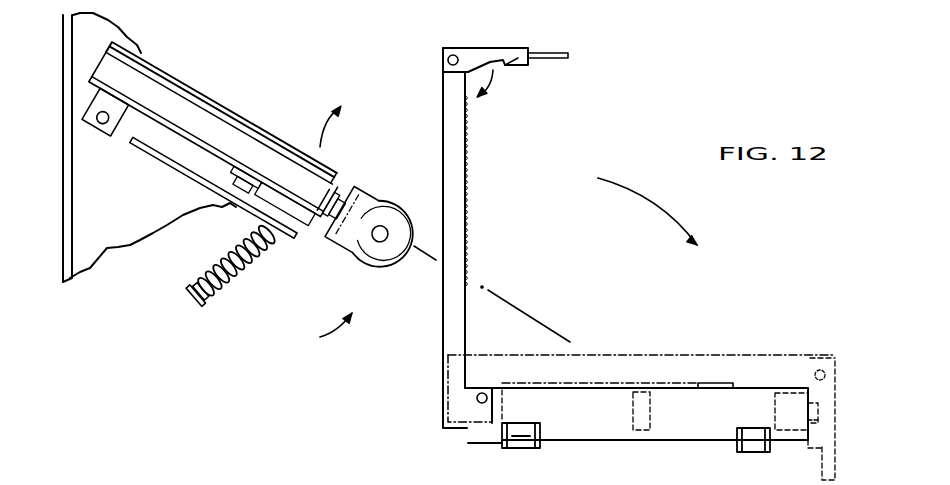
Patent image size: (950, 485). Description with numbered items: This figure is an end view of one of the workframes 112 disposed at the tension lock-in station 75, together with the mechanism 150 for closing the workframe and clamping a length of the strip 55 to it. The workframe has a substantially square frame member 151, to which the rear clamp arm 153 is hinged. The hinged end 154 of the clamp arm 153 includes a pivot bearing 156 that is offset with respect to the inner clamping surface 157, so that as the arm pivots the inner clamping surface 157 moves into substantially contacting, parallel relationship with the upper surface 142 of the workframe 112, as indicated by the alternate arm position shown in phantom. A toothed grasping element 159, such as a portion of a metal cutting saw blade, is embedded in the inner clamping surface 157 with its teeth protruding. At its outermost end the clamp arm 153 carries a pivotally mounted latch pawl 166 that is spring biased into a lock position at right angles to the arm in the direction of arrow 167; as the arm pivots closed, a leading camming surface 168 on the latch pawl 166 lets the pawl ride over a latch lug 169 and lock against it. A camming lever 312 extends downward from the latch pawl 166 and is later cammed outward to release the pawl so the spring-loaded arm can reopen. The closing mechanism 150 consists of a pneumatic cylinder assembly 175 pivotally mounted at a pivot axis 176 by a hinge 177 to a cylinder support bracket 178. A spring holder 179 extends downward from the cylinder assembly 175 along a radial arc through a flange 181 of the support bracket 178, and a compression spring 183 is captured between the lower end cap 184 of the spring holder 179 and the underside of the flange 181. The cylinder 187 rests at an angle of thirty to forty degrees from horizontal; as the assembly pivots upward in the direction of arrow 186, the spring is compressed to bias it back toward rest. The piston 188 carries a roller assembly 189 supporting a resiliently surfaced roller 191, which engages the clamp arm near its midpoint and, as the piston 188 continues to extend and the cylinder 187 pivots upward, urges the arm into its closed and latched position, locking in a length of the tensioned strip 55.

The strip 55 is at (712, 382).
The tension lock-in station 75 is at (321, 333).
The workframe 112 is at (573, 444).
The upper surface 142 is at (603, 386).
The mechanism 150 is at (243, 112).
The frame member 151 is at (753, 388).
The rear clamp arm 153 is at (468, 142).
The hinged end 154 is at (443, 395).
The pivot bearing 156 is at (483, 392).
The inner clamping surface 157 is at (464, 238).
The toothed grasping element 159 is at (468, 213).
The latch pawl 166 is at (518, 63).
The arrow 167 is at (494, 80).
The leading camming surface 168 is at (513, 70).
The latch lug 169 is at (813, 428).
The pneumatic cylinder assembly 175 is at (177, 80).
The pivot axis 176 is at (85, 122).
The hinge 177 is at (117, 136).
The cylinder support bracket 178 is at (102, 243).
The spring holder 179 is at (197, 302).
The flange 181 is at (240, 208).
The compression spring 183 is at (240, 272).
The lower end cap 184 is at (187, 290).
The arrow 186 is at (323, 109).
The cylinder 187 is at (258, 138).
The piston 188 is at (341, 186).
The roller assembly 189 is at (347, 250).
The roller 191 is at (383, 256).
The camming lever 312 is at (568, 57).